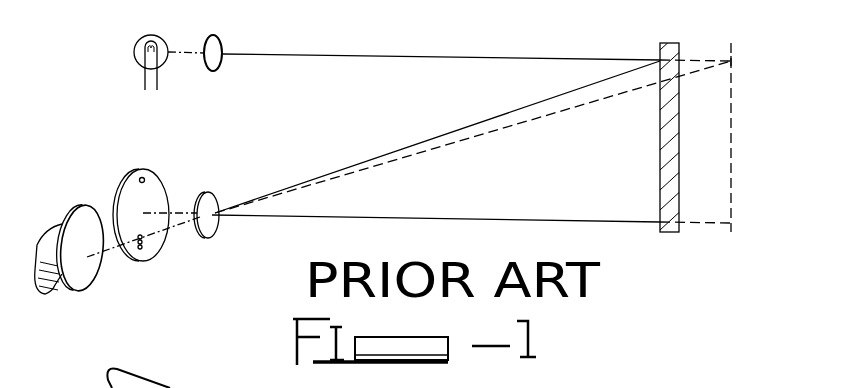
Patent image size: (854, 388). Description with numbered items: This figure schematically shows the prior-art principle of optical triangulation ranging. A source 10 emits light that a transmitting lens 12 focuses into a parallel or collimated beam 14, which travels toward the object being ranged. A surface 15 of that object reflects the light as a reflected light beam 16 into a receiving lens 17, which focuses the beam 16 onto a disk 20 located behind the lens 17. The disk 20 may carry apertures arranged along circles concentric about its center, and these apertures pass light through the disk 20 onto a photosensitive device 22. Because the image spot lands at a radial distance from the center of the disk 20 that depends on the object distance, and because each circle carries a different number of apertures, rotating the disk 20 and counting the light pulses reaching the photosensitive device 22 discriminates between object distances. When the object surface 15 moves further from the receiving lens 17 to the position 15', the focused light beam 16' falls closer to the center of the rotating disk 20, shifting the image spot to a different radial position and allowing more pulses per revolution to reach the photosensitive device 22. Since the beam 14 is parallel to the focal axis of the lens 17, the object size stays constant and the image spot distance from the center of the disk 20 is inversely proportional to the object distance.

The source 10 is at (134, 47).
The transmitting lens 12 is at (225, 51).
The collimated beam 14 is at (463, 54).
The surface 15 is at (647, 138).
The object surface at farther position 15' is at (705, 137).
The reflected light beam 16 is at (437, 137).
The focused light beam 16' is at (473, 137).
The receiving lens 17 is at (212, 197).
The disk 20 is at (143, 192).
The photosensitive device 22 is at (80, 215).